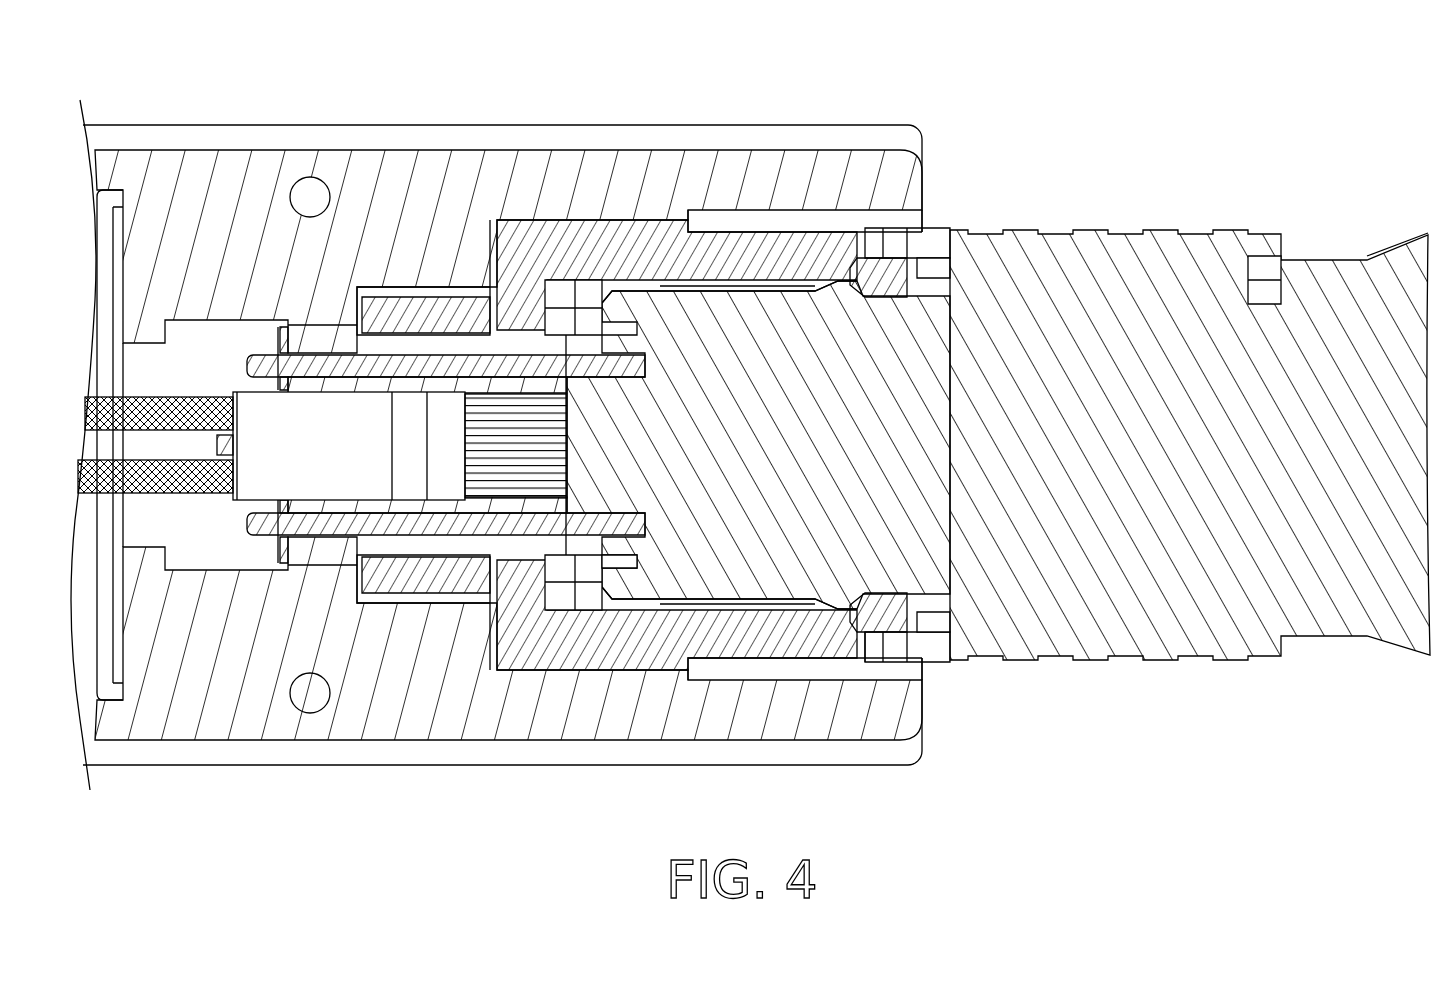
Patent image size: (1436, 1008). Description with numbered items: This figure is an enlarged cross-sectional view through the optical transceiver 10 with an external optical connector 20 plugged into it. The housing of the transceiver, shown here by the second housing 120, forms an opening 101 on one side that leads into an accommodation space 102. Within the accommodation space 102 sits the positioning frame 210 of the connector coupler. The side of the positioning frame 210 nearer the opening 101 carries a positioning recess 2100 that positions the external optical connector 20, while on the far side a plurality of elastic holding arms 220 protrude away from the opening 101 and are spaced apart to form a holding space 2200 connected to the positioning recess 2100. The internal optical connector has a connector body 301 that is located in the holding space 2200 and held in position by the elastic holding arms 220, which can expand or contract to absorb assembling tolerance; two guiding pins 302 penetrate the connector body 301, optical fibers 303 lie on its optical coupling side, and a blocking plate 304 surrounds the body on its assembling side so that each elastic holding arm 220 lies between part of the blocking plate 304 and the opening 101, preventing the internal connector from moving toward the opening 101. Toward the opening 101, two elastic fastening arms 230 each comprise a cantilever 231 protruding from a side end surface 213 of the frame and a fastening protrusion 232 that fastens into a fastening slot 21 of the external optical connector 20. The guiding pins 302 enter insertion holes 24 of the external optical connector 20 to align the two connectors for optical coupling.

The optical transceiver 10 is at (230, 70).
The external optical connector 20 is at (1190, 188).
The fastening slot 21 is at (935, 262).
The insertion hole 24 is at (636, 343).
The opening 101 is at (928, 213).
The accommodation space 102 is at (852, 218).
The second housing 120 is at (185, 750).
The positioning frame 210 is at (520, 300).
The side end surface 213 is at (702, 228).
The elastic holding arm 220 is at (405, 310).
The elastic fastening arm 230 is at (842, 672).
The cantilever 231 is at (792, 255).
The fastening protrusion 232 is at (893, 285).
The connector body 301 is at (333, 337).
The guiding pin 302 is at (565, 305).
The optical fiber 303 is at (525, 392).
The blocking plate 304 is at (300, 335).
The positioning recess 2100 is at (614, 605).
The holding space 2200 is at (375, 550).